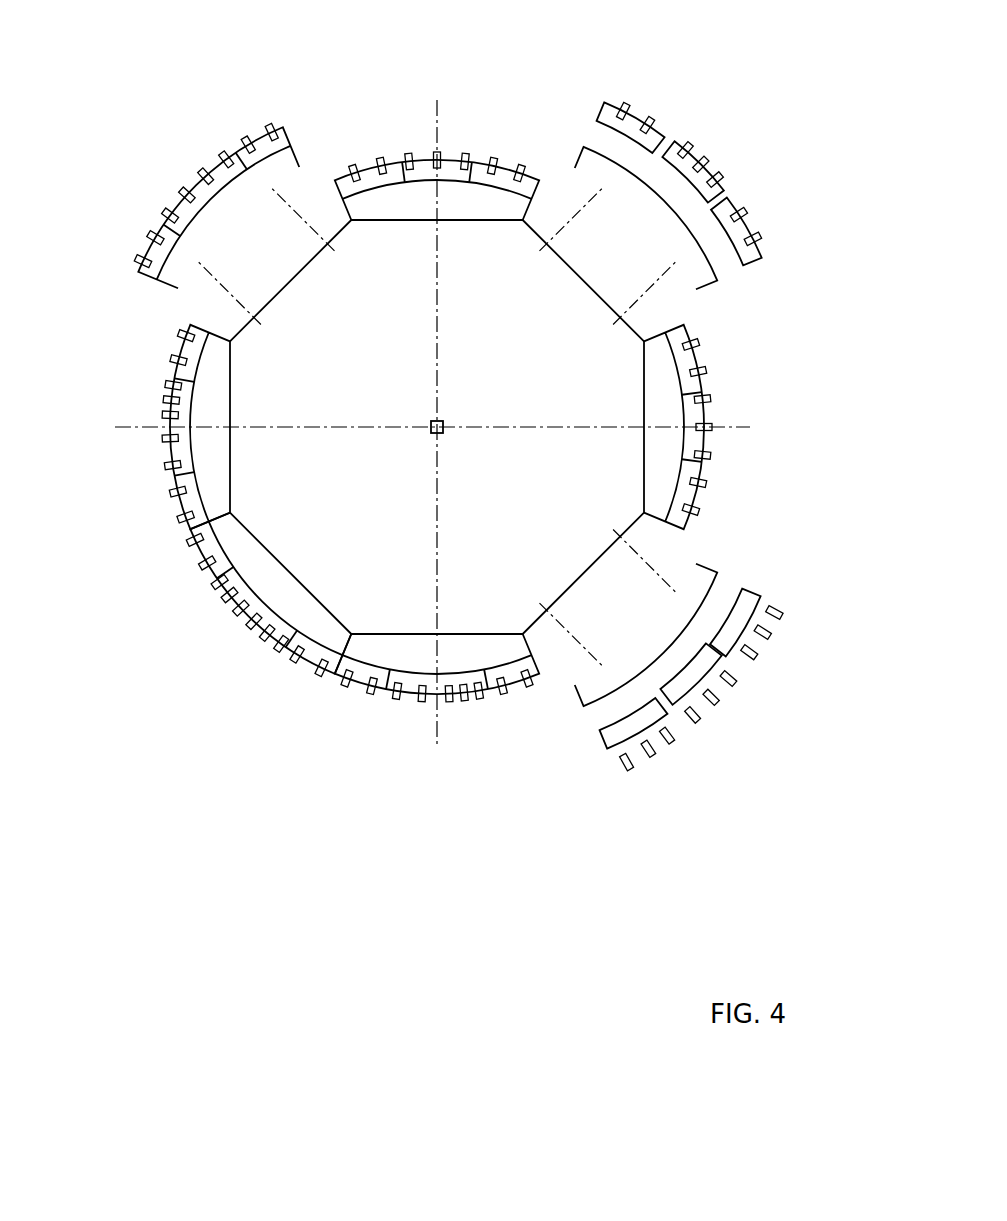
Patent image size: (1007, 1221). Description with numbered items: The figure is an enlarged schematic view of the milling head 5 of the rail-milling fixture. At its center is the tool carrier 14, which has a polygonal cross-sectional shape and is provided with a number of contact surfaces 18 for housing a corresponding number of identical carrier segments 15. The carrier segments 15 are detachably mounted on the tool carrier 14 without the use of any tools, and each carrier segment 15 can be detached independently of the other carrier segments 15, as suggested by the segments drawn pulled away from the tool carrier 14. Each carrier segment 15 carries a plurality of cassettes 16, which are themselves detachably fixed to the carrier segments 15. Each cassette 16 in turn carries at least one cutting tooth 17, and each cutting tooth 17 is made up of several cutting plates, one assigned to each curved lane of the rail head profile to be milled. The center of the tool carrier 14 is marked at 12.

The milling head 5 is at (741, 64).
The central axis / shaft 12 is at (422, 457).
The tool carrier 14 is at (343, 483).
The carrier segment 15 is at (187, 257).
The cassette 16 is at (218, 172).
The cutting tooth 17 is at (249, 107).
The contact surface 18 is at (283, 257).